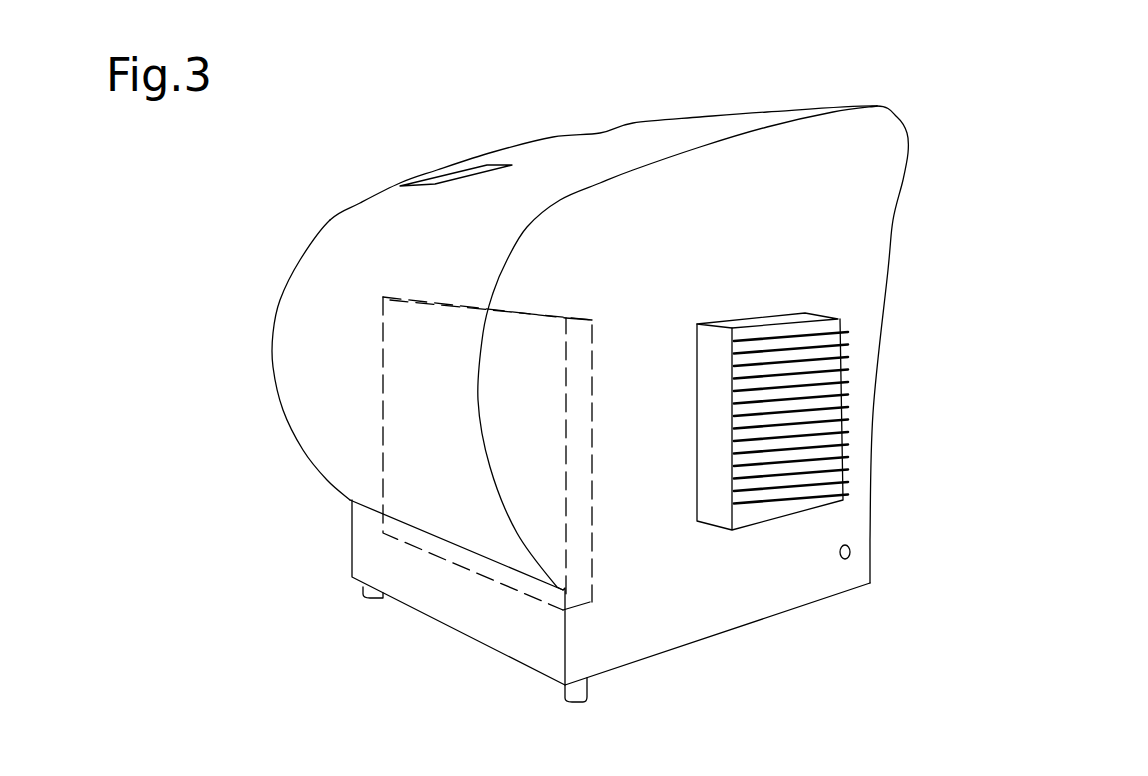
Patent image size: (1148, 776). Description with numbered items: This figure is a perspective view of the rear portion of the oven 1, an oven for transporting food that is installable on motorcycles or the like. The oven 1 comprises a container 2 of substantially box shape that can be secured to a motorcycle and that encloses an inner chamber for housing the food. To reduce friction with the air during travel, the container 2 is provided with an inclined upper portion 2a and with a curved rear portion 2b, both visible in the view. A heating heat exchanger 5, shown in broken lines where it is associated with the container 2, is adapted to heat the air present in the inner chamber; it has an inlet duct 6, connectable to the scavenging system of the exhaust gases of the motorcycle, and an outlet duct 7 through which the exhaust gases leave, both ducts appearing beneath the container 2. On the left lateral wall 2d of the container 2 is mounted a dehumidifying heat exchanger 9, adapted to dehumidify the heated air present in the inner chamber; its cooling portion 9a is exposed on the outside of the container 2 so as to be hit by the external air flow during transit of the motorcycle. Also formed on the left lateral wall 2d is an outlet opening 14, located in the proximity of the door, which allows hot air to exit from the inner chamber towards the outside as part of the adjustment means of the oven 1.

The oven 1 is at (958, 60).
The container 2 is at (893, 234).
The inclined upper portion 2a is at (557, 155).
The curved rear portion 2b is at (303, 378).
The left lateral wall 2d is at (813, 160).
The heating heat exchanger 5 is at (383, 317).
The inlet duct 6 is at (583, 692).
The outlet duct 7 is at (362, 584).
The dehumidifying heat exchanger 9 is at (872, 409).
The cooling portion 9a is at (826, 324).
The outlet opening 14 is at (849, 552).